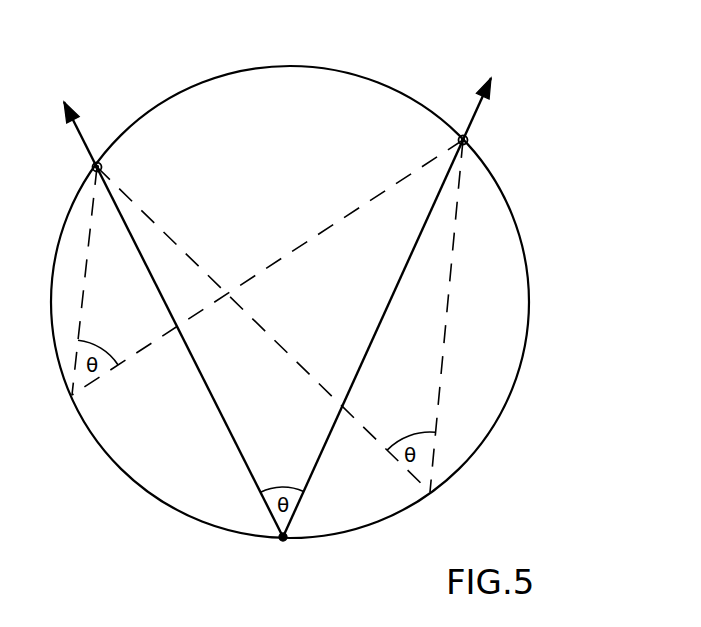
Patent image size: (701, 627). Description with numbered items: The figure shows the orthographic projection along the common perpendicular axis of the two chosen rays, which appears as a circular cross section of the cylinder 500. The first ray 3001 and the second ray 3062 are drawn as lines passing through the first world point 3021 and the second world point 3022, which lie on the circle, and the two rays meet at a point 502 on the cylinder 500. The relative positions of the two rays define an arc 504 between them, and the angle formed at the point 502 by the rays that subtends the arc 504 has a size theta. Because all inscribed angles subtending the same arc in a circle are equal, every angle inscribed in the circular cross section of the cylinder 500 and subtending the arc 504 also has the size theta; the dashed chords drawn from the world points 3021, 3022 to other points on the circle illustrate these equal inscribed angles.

The arc 504 is at (378, 80).
The cylinder 500 is at (552, 224).
The first ray 3001 is at (131, 232).
The second line 3062 is at (412, 257).
The first world point 3021 is at (99, 155).
The second world point 3022 is at (470, 134).
The point 502 is at (281, 543).